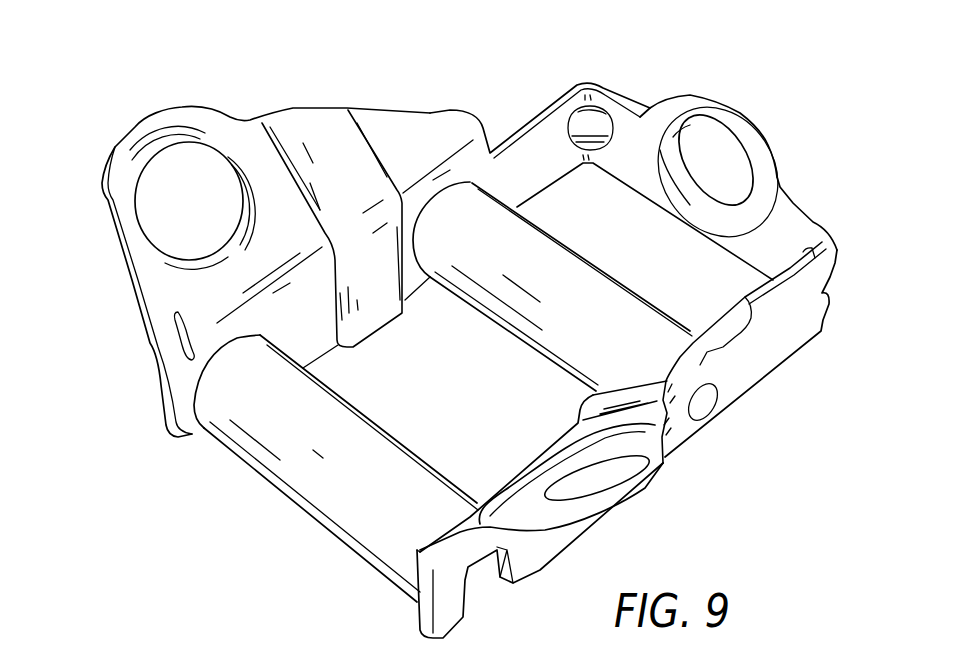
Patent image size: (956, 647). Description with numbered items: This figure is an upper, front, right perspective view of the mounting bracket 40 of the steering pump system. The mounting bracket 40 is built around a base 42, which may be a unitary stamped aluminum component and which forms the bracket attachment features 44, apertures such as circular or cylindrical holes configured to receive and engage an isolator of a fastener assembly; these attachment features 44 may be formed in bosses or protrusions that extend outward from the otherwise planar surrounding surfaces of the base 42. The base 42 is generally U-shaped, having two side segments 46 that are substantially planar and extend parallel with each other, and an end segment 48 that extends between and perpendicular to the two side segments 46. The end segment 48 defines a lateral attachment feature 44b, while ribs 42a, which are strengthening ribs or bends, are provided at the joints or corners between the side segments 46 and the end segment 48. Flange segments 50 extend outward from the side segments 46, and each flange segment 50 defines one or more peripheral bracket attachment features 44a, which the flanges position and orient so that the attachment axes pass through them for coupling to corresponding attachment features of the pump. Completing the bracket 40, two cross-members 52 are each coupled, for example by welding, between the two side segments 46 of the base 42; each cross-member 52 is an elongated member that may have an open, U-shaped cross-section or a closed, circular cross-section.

The mounting bracket 40 is at (202, 56).
The base 42 is at (441, 340).
The ribs 42a is at (583, 125).
The bracket attachment features 44 is at (407, 299).
The peripheral bracket attachment features 44a is at (152, 210).
The lateral attachment feature 44b is at (713, 137).
The side segments 46 is at (533, 120).
The end segment 48 is at (807, 224).
The flange segments 50 is at (158, 298).
The cross-members 52 is at (257, 467).